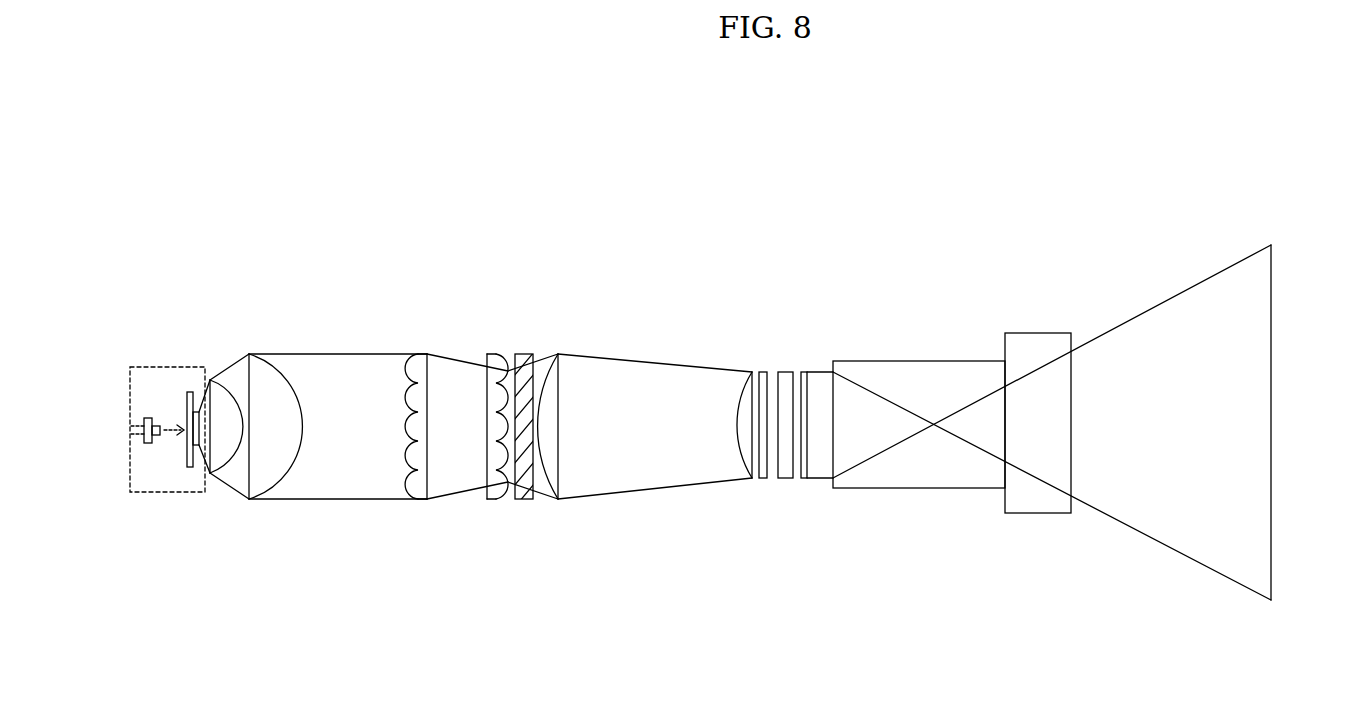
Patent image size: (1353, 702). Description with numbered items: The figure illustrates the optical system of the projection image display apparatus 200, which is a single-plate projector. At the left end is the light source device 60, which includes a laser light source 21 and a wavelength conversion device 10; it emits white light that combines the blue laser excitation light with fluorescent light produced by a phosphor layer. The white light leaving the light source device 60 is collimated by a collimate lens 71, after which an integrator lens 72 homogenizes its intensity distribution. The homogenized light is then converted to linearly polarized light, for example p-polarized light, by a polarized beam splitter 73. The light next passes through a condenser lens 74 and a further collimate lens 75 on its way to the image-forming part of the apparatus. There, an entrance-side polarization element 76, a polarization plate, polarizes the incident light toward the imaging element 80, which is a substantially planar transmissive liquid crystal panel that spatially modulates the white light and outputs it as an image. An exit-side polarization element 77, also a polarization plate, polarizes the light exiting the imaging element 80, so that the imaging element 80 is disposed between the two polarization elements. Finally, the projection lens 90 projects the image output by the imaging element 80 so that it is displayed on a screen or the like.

The projection image display apparatus 200 is at (942, 275).
The light source device 60 is at (167, 367).
The laser light source 21 is at (149, 444).
The wavelength conversion device 10 is at (190, 468).
The collimate lens 71 is at (216, 466).
The integrator lens 72 is at (492, 489).
The polarized beam splitter 73 is at (530, 501).
The condenser lens 74 is at (558, 486).
The collimate lens 75 is at (742, 465).
The entrance-side polarization element 76 is at (764, 480).
The imaging element 80 is at (786, 475).
The exit-side polarization element 77 is at (804, 478).
The projection lens 90 is at (1018, 502).